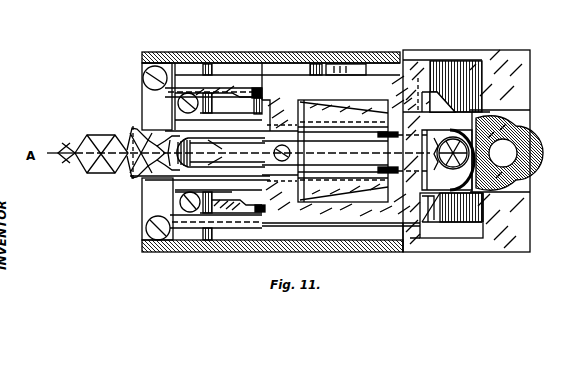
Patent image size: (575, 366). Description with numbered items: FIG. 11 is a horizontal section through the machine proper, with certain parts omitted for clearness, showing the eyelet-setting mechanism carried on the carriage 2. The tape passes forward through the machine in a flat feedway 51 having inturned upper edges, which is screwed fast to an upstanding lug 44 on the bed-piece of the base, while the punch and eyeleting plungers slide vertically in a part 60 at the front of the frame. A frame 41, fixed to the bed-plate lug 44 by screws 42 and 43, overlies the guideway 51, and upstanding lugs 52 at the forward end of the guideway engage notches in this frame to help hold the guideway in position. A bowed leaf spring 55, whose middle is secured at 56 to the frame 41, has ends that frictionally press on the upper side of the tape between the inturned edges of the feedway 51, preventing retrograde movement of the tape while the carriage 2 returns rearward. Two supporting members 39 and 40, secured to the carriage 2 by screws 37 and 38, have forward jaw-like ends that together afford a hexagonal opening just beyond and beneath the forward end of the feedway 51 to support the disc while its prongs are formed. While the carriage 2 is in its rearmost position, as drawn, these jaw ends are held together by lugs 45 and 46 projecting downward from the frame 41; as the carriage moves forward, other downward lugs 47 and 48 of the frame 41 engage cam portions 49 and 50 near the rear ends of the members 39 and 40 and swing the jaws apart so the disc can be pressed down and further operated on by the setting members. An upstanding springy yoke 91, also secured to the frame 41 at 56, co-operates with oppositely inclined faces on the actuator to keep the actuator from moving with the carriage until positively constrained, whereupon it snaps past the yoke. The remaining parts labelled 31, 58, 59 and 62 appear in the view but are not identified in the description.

The carriage 2 is at (200, 56).
The spring 31 is at (306, 75).
The screw 37 is at (180, 103).
The screw 38 is at (190, 203).
The supporting member 39 is at (437, 110).
The supporting member 40 is at (447, 198).
The frame 41 is at (401, 92).
The screw 42 is at (145, 76).
The screw 43 is at (160, 228).
The upstanding lug 44 is at (155, 190).
The lug 45 is at (427, 80).
The lug 46 is at (427, 196).
The lug 47 is at (261, 88).
The lug 48 is at (257, 210).
The cam portion 49 is at (225, 95).
The cam portion 50 is at (240, 200).
The feedway 51 is at (133, 131).
The upstanding lugs 52 is at (388, 168).
The bowed leaf spring 55 is at (355, 150).
The securing point 56 is at (291, 153).
The cam 58 is at (477, 110).
The wall 59 is at (483, 194).
The front part of frame 60 is at (528, 142).
The block 62 is at (287, 75).
The springy yoke 91 is at (268, 153).